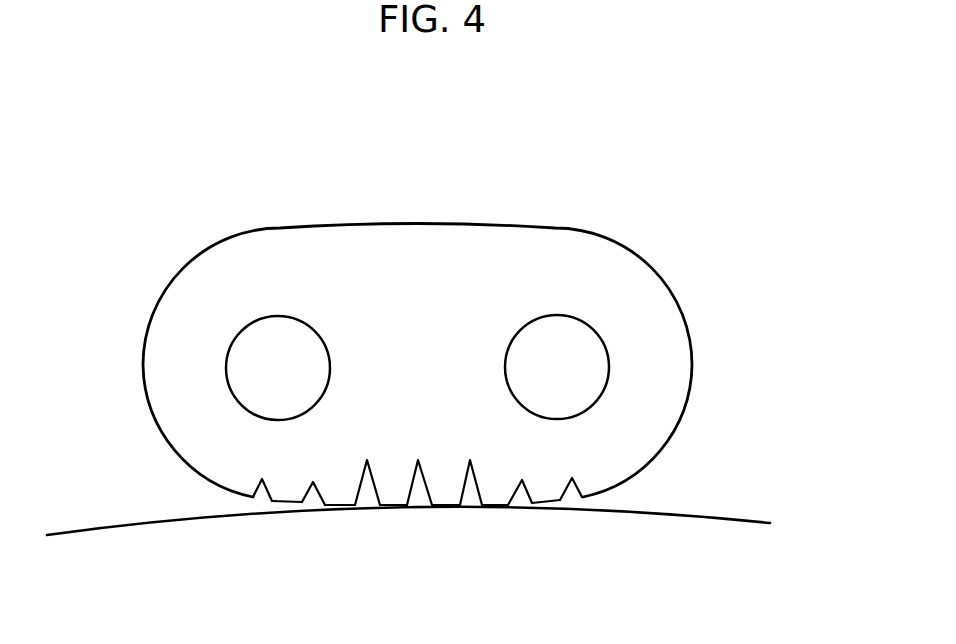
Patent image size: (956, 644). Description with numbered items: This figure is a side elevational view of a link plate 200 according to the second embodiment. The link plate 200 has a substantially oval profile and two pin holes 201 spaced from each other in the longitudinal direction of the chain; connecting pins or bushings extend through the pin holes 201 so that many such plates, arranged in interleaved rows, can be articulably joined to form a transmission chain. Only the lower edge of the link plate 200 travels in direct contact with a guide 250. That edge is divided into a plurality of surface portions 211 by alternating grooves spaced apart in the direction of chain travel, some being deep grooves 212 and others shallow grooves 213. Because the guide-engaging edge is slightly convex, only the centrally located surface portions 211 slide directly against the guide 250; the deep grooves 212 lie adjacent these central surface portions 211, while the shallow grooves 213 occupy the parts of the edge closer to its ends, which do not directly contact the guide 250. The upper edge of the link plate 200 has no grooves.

The link plate 200 is at (505, 272).
The pin holes 201 is at (282, 320).
The surface portions 211 is at (288, 507).
The deep grooves 212 is at (368, 472).
The shallow grooves 213 is at (297, 498).
The guide 250 is at (715, 516).